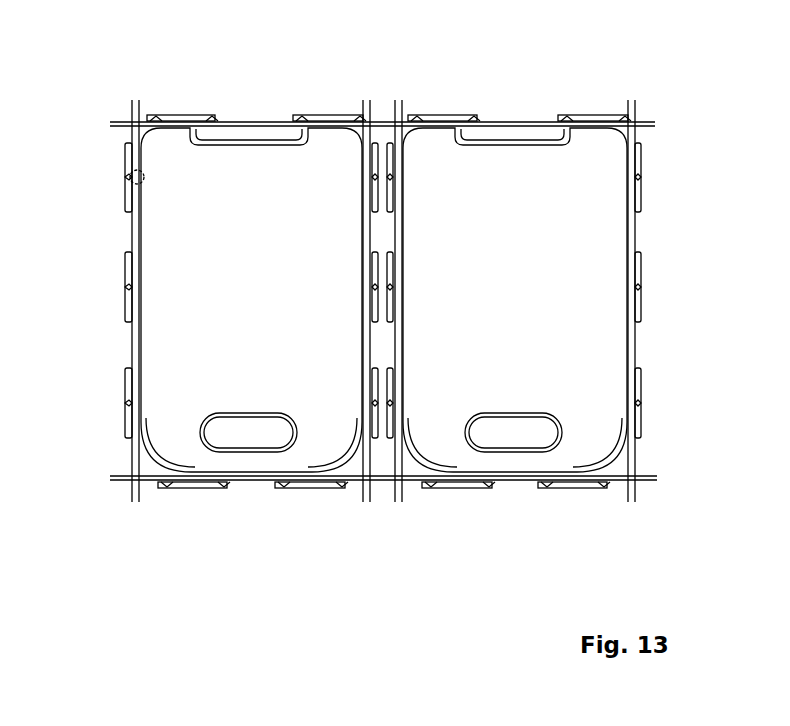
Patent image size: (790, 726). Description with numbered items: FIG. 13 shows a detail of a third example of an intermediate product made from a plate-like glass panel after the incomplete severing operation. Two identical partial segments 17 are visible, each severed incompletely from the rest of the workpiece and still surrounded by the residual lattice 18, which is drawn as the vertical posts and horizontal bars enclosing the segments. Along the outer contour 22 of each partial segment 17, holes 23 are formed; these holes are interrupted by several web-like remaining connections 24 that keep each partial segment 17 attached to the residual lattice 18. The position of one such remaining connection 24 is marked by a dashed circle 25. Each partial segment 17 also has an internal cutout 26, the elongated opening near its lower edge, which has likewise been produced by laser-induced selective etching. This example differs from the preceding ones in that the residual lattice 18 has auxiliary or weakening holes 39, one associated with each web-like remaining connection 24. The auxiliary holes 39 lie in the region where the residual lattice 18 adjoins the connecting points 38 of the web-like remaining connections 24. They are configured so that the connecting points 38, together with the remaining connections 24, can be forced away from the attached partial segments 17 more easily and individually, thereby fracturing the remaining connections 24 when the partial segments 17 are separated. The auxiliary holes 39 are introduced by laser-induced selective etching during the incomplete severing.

The partial segment 17 is at (257, 287).
The residual lattice 18 is at (640, 138).
The outer contour 22 is at (130, 338).
The hole 23 is at (130, 233).
The web-like remaining connection 24 is at (135, 177).
The dashed circle 25 is at (130, 178).
The internal cutout 26 is at (252, 438).
The connecting point 38 is at (318, 116).
The auxiliary hole 39 is at (318, 116).